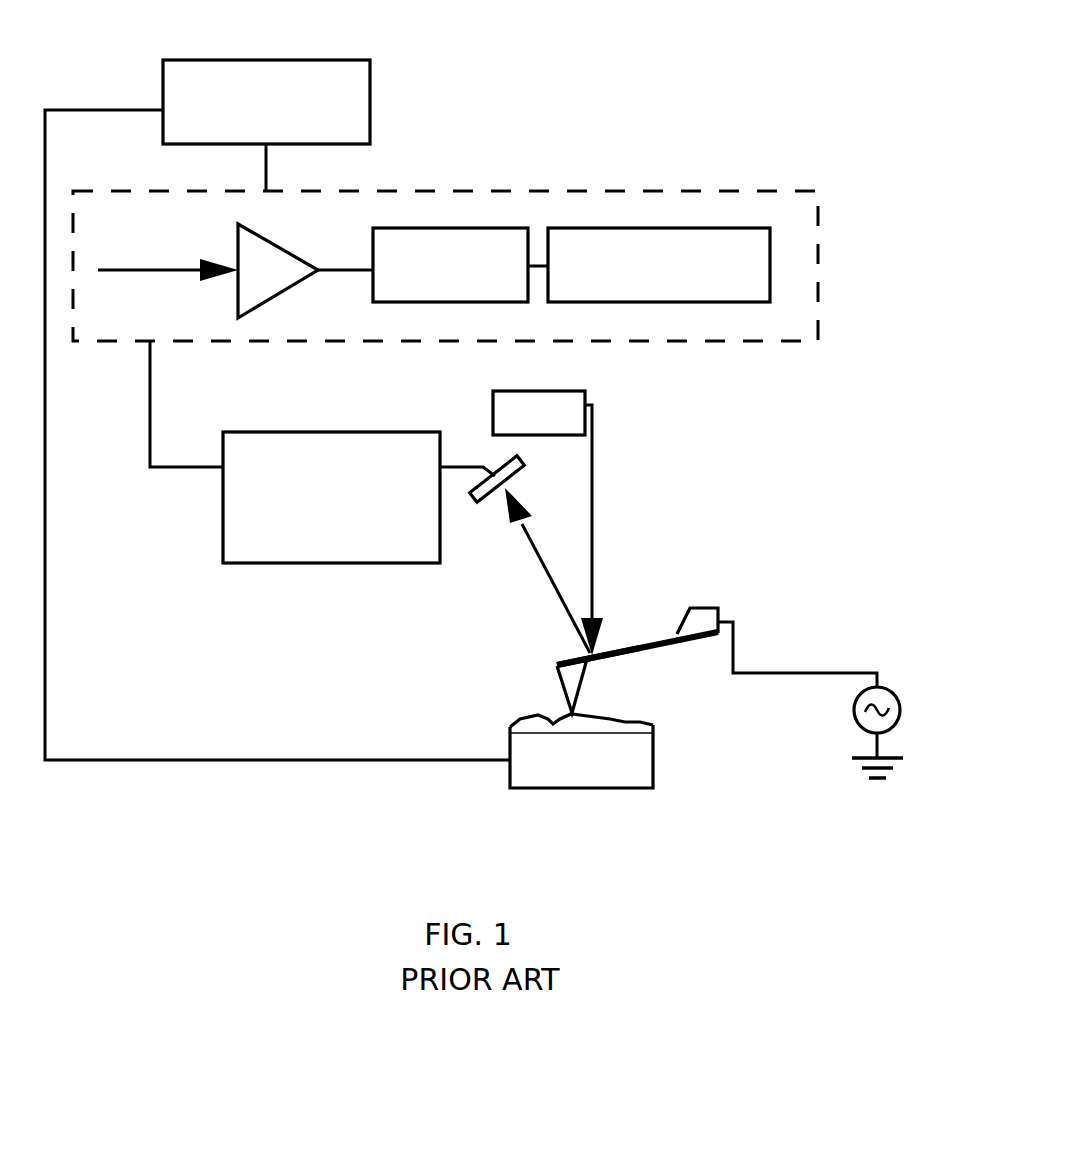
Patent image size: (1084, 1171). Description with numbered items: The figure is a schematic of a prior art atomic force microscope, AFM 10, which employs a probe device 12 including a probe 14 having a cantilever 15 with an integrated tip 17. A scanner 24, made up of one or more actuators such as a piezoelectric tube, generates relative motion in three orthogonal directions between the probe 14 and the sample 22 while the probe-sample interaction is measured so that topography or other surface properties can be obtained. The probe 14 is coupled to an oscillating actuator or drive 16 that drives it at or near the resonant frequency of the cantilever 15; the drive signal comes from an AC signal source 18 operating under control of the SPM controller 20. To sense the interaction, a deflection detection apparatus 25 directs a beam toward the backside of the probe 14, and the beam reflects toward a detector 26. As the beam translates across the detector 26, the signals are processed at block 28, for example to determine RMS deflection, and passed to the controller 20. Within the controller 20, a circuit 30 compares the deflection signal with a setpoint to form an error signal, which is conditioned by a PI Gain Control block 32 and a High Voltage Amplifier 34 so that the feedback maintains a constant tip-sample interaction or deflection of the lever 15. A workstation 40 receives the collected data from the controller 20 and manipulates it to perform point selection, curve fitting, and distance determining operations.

The AFM 10 is at (637, 45).
The probe device 12 is at (749, 578).
The probe 14 is at (621, 664).
The cantilever 15 is at (647, 645).
The oscillating actuator 16 is at (693, 623).
The tip 17 is at (563, 689).
The AC signal source 18 is at (900, 706).
The SPM controller 20 is at (617, 190).
The sample 22 is at (517, 722).
The scanner 24 is at (603, 790).
The deflection detection apparatus 25 is at (480, 438).
The detector 26 is at (494, 497).
The signal processing block 28 is at (297, 432).
The comparison circuit 30 is at (298, 283).
The PI Gain Control block 32 is at (449, 228).
The High Voltage Amplifier 34 is at (562, 228).
The workstation 40 is at (327, 60).